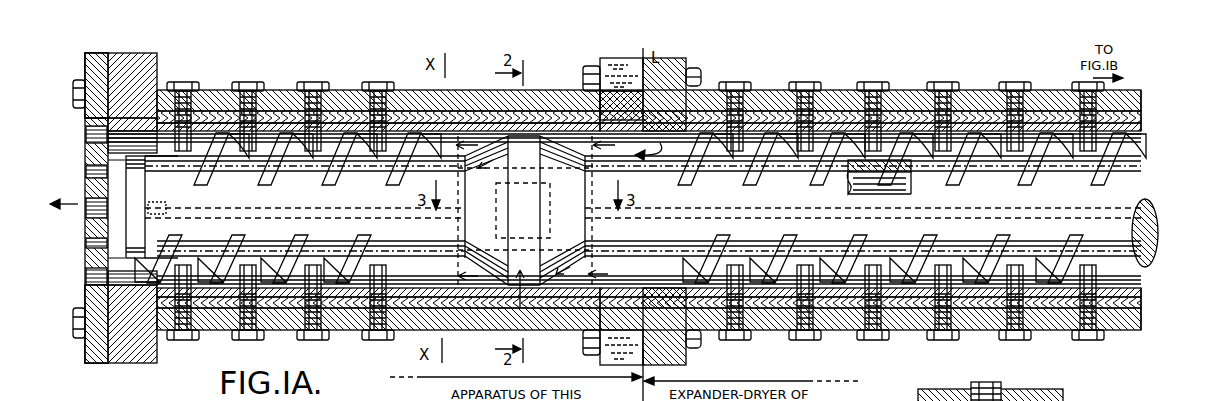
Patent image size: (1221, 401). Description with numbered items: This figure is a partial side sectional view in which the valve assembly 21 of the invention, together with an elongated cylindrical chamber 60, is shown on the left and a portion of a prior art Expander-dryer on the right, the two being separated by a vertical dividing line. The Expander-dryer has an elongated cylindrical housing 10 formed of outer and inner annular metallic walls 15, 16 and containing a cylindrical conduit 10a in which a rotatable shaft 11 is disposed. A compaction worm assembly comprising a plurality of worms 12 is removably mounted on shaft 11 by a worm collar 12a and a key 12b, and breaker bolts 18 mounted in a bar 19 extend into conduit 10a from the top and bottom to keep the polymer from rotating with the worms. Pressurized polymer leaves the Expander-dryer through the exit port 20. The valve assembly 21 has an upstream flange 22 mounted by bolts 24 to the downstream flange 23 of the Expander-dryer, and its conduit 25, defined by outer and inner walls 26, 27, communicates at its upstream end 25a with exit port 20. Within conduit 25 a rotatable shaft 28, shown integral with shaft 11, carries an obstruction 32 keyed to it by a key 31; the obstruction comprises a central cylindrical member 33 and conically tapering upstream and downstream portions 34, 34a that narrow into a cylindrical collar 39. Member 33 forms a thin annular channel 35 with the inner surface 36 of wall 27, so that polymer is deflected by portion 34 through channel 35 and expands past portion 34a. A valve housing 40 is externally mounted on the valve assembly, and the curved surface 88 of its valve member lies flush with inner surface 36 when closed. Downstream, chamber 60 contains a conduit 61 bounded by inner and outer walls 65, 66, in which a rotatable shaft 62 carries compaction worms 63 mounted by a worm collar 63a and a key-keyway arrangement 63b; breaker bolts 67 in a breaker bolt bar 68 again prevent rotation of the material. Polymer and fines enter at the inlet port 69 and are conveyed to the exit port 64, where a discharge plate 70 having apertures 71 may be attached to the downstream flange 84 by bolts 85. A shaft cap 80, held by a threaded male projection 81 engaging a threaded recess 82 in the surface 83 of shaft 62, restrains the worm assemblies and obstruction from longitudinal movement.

The cylindrical housing 10 is at (880, 82).
The cylindrical conduit 10a is at (780, 138).
The rotatable shaft 11 is at (1145, 223).
The worms 12 is at (820, 124).
The worm collar 12a is at (1158, 246).
The key 12b is at (1143, 199).
The outer annular metallic wall 15 is at (955, 100).
The inner annular metallic wall 16 is at (978, 112).
The breaker bolts 18 is at (795, 78).
The bar 19 is at (762, 98).
The exit port 20 is at (659, 138).
The valve assembly 21 is at (538, 82).
The upstream flange 22 is at (612, 56).
The downstream flange 23 is at (660, 56).
The bolts 24 is at (573, 62).
The conduit 25 is at (510, 210).
The upstream end 25a is at (653, 326).
The outer wall 26 is at (433, 104).
The inner wall 27 is at (445, 125).
The rotatable shaft 28 is at (600, 155).
The key 31 is at (568, 232).
The obstruction 32 is at (514, 318).
The central cylindrical member 33 is at (525, 150).
The upstream conical portion 34 is at (572, 185).
The downstream conical portion 34a is at (462, 223).
The annular channel 35 is at (518, 104).
The inner surface 36 is at (563, 157).
The cylindrical collar 39 is at (628, 270).
The valve housing 40 is at (585, 225).
The elongated cylindrical chamber 60 is at (272, 81).
The conduit 61 is at (330, 123).
The rotatable shaft 62 is at (160, 152).
The compaction worms 63 is at (207, 125).
The worm collar 63a is at (362, 187).
The key-keyway arrangement 63b is at (225, 198).
The exit port 64 is at (124, 110).
The inner wall 65 is at (203, 300).
The outer wall 66 is at (219, 290).
The breaker bolts 67 is at (368, 75).
The breaker bolt bar 68 is at (340, 322).
The inlet port 69 is at (415, 272).
The discharge plate 70 is at (77, 55).
The apertures 71 is at (100, 271).
The shaft cap 80 is at (118, 233).
The threaded male projection 81 is at (150, 194).
The threaded recess 82 is at (152, 206).
The surface 83 is at (100, 161).
The downstream flange 84 is at (118, 52).
The bolts 85 is at (65, 89).
The surface 88 is at (485, 185).